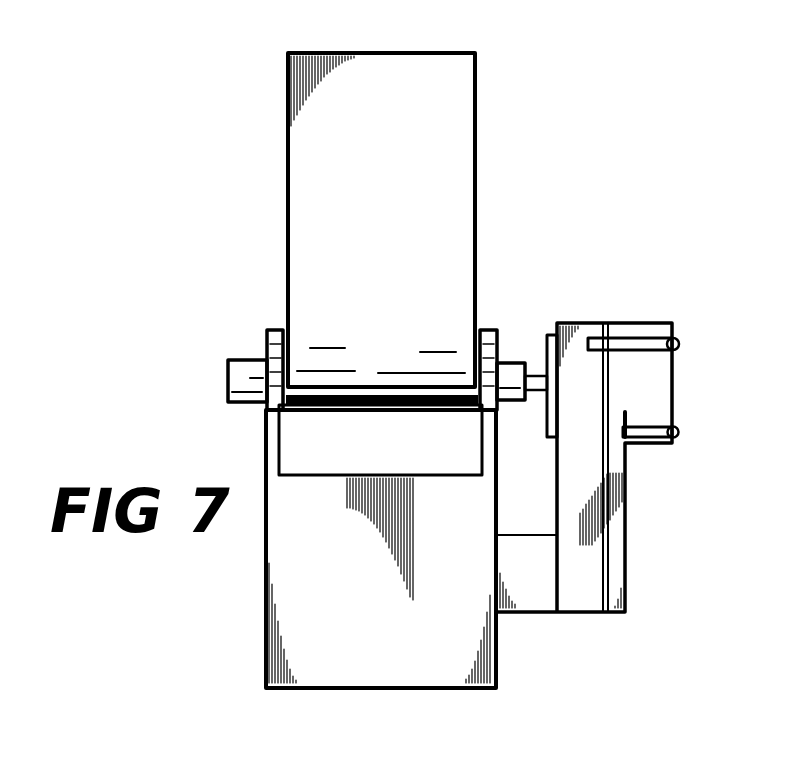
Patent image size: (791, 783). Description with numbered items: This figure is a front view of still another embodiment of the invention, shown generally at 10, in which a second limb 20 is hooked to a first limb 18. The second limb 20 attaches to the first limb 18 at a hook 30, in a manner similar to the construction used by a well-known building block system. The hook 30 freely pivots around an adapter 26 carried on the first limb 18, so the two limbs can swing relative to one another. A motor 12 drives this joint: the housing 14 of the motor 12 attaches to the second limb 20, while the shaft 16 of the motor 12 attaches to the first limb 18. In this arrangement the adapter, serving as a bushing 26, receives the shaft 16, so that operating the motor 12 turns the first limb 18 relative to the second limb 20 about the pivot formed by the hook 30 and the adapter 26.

The embodiment 10 is at (655, 250).
The motor 12 is at (640, 556).
The housing 14 is at (628, 470).
The shaft 16 is at (537, 378).
The first limb 18 is at (476, 165).
The second limb 20 is at (497, 645).
The adapter 26 is at (503, 363).
The hook 30 is at (268, 335).